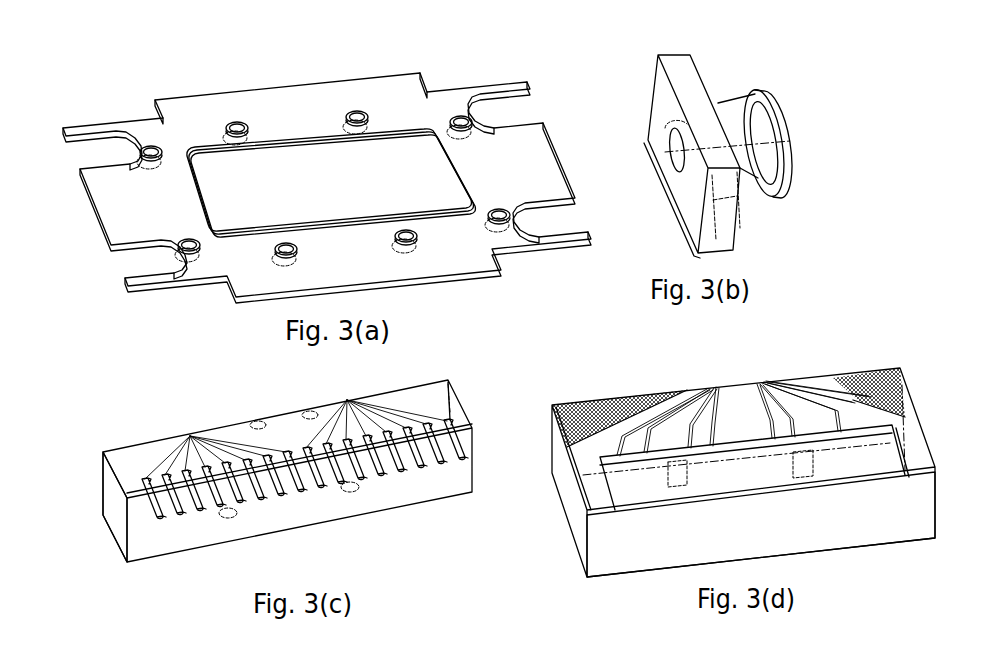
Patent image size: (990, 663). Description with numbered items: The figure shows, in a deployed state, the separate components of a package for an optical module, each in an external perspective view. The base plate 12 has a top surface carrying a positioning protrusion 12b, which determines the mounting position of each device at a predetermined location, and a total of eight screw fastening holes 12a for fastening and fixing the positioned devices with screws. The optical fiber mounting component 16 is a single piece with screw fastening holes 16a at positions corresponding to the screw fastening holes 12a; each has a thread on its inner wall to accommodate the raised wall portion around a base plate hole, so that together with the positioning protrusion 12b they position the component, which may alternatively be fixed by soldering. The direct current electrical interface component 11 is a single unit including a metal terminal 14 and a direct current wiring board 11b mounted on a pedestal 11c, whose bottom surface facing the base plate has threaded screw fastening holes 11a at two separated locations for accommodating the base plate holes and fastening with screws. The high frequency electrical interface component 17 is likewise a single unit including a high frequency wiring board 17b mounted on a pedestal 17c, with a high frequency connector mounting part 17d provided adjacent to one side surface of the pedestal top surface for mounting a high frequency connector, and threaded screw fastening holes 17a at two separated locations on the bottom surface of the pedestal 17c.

In FIG. 3C, the direct current electrical interface component 11 is at (148, 429).
In FIG. 3C, the screw fastening holes 11a is at (338, 485).
In FIG. 3C, the direct current wiring board 11b is at (122, 463).
In FIG. 3C, the pedestal 11c is at (104, 506).
In FIG. 3A, the base plate 12 is at (243, 92).
In FIG. 3A, the screw fastening holes 12a is at (411, 255).
In FIG. 3A, the positioning protrusion 12b is at (303, 137).
In FIG. 3C, the metal terminal 14 is at (298, 484).
In FIG. 3B, the optical fiber mounting component 16 is at (733, 103).
In FIG. 3B, the screw fastening holes 16a is at (737, 228).
In FIG. 3D, the high frequency electrical interface component 17 is at (899, 349).
In FIG. 3D, the screw fastening holes 17a is at (812, 481).
In FIG. 3D, the high frequency wiring board 17b is at (575, 445).
In FIG. 3D, the pedestal 17c is at (610, 557).
In FIG. 3D, the high frequency connector mounting part 17d is at (885, 463).